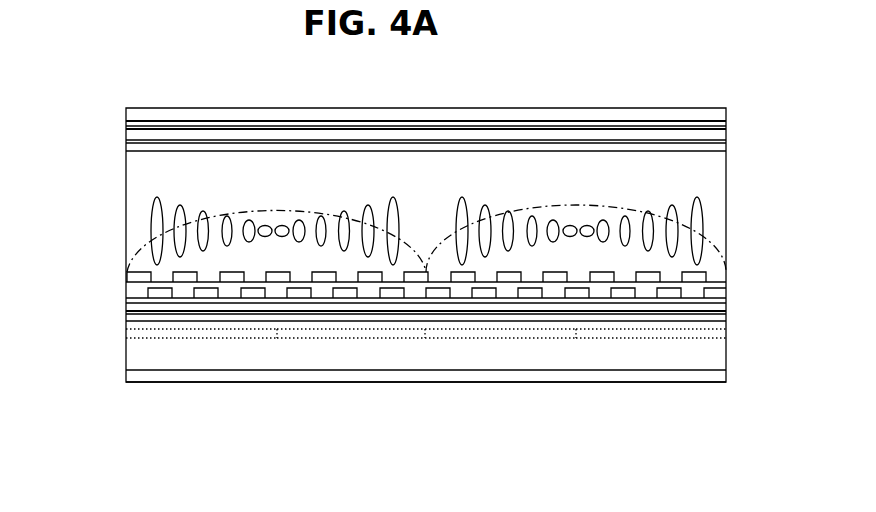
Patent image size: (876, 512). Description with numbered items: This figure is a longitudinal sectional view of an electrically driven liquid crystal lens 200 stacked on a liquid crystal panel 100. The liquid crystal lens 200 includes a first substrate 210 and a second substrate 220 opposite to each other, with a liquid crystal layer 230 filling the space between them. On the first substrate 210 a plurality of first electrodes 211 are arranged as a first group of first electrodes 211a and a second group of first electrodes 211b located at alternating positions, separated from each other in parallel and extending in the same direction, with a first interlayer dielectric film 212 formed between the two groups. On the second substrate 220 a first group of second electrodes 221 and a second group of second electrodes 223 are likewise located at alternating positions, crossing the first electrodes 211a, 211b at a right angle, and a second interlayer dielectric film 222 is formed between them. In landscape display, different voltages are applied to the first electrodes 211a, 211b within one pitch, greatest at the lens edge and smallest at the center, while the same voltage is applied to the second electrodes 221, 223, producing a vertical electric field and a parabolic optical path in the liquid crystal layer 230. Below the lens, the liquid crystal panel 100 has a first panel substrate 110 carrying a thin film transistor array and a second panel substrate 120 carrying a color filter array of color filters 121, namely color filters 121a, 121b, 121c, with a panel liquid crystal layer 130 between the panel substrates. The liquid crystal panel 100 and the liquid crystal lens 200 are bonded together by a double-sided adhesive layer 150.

The liquid crystal panel 100 is at (745, 321).
The first panel substrate 110 is at (146, 374).
The second panel substrate 120 is at (395, 414).
The color filters 121 is at (351, 414).
The color filter 121a is at (227, 333).
The color filter 121b is at (348, 333).
The color filter 121c is at (500, 388).
The panel liquid crystal layer 130 is at (607, 355).
The double-sided adhesive layer 150 is at (727, 312).
The liquid crystal lens electrically driven 200 is at (745, 110).
The first substrate 210 is at (128, 311).
The first electrodes 211 is at (369, 284).
The first group of first electrodes 211a is at (127, 296).
The second group of first electrodes 211b is at (127, 276).
The first interlayer dielectric film 212 is at (690, 292).
The second substrate 220 is at (127, 120).
The first group of second electrodes 221 is at (127, 129).
The second interlayer dielectric film 222 is at (128, 137).
The second group of second electrodes 223 is at (129, 146).
The liquid crystal layer 230 is at (150, 208).